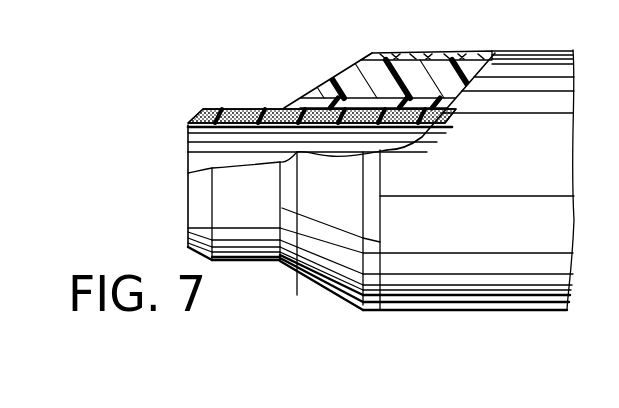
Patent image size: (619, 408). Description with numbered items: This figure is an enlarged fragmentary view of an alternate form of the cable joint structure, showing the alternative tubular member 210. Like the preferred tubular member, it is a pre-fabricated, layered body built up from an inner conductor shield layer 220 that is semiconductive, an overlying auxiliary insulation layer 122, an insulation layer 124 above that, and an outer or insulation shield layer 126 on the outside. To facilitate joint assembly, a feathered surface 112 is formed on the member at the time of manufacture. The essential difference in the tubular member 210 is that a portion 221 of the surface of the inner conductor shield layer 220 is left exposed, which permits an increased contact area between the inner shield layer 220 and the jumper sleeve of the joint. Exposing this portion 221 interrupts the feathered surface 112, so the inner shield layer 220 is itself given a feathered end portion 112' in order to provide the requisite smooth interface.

The tubular member 210 is at (292, 73).
The outer or insulation shield layer 126 is at (456, 50).
The insulation layer 124 is at (360, 72).
The auxiliary insulation layer 122 is at (290, 110).
The inner conductor shield layer 220 is at (200, 116).
The exposed portion of inner conductor shield layer surface 221 is at (260, 262).
The feathered end portion 112' is at (169, 248).
The feathered surface 112 is at (426, 272).